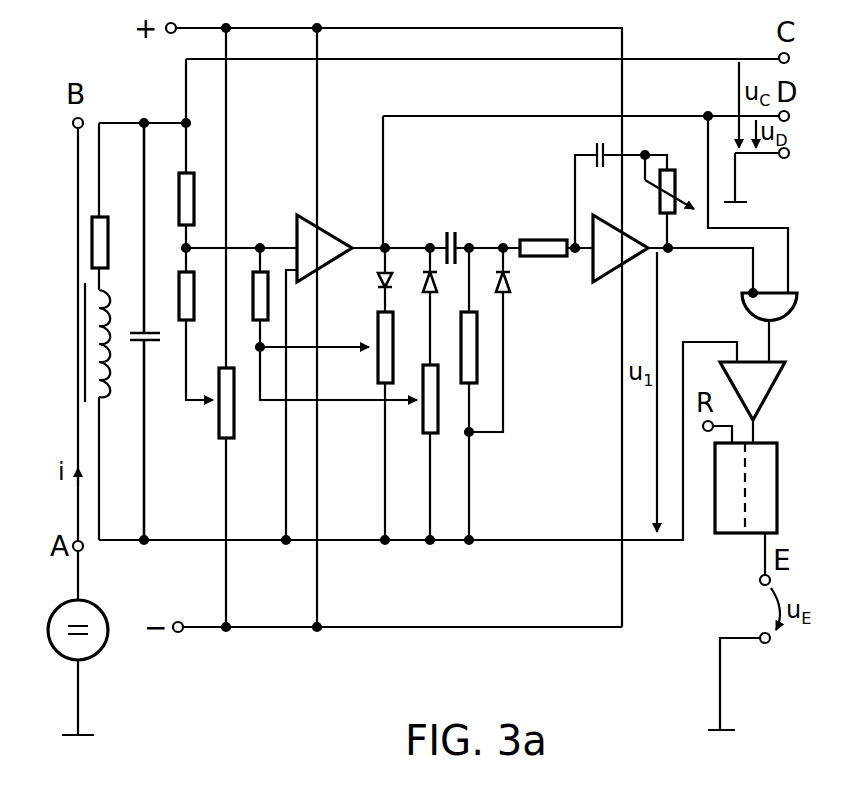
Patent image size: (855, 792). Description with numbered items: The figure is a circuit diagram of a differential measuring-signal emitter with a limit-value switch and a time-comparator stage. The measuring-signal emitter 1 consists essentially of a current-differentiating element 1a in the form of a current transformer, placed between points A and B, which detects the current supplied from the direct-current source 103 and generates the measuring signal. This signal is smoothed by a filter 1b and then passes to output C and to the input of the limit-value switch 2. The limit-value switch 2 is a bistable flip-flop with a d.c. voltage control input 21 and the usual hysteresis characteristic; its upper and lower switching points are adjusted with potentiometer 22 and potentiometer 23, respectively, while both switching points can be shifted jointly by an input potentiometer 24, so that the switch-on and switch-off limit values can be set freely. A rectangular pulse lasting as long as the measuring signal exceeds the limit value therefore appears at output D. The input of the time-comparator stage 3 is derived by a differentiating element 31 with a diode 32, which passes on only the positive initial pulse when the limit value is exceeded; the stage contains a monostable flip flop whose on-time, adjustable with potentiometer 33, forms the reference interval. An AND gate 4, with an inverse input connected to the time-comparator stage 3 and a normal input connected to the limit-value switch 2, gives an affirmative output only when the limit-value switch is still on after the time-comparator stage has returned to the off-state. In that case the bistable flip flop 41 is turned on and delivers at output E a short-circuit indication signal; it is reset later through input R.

The measuring-signal emitter 1 is at (101, 331).
The current-differentiating element 1a is at (107, 393).
The filter 1b is at (142, 254).
The limit-value switch 2 is at (357, 190).
The time-comparator stage 3 is at (609, 344).
The AND gate 4 is at (811, 281).
The d.c. voltage control input 21 is at (188, 166).
The potentiometer 22 is at (376, 333).
The potentiometer 23 is at (437, 433).
The input potentiometer 24 is at (234, 428).
The differentiating element 31 is at (466, 221).
The diode 32 is at (508, 287).
The potentiometer 33 is at (676, 178).
The bistable flip flop 41 is at (778, 493).
The direct-current source 103 is at (96, 654).